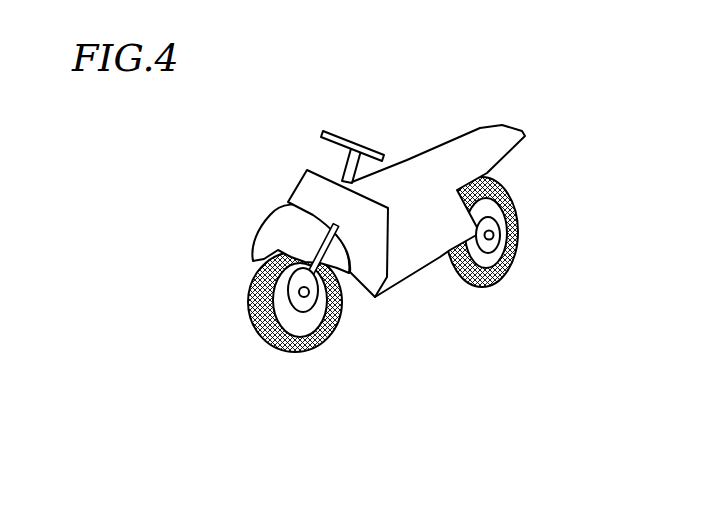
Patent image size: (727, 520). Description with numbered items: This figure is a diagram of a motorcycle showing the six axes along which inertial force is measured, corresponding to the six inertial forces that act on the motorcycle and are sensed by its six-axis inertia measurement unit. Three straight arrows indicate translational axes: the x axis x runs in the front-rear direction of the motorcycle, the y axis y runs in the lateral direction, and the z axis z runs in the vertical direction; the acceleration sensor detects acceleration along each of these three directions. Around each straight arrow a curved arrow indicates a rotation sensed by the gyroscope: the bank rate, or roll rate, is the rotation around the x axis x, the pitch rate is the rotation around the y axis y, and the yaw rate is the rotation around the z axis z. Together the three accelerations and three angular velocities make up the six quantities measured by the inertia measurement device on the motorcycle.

The x axis x is at (215, 307).
The y axis y is at (288, 169).
The z axis z is at (417, 328).